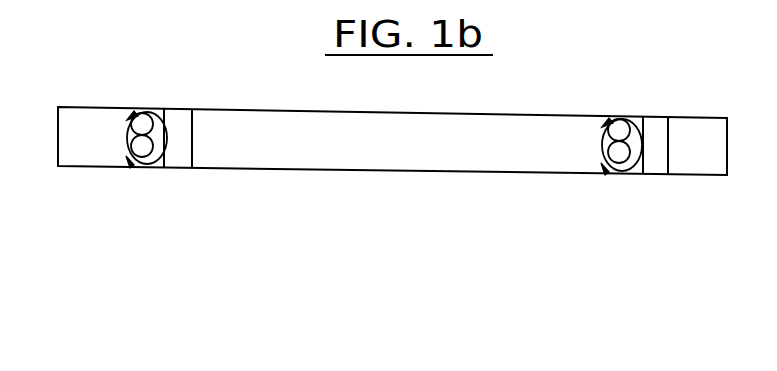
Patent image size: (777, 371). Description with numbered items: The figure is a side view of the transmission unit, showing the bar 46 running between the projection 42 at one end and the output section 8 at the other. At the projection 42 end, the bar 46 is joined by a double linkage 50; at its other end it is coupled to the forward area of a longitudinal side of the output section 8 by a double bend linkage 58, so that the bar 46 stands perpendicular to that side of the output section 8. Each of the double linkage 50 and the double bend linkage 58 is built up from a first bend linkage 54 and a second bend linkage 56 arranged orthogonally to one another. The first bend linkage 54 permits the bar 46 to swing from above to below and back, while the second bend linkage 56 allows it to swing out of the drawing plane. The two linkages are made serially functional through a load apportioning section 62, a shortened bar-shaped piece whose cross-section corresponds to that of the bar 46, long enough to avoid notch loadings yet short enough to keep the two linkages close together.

The output section 8 is at (123, 138).
The projection 42 is at (691, 145).
The bar 46 is at (392, 141).
The double linkage 50 is at (648, 110).
The first bend linkage 54 is at (183, 155).
The second bend linkage 56 is at (142, 148).
The double bend linkage 58 is at (167, 100).
The load apportioning section 62 is at (157, 162).